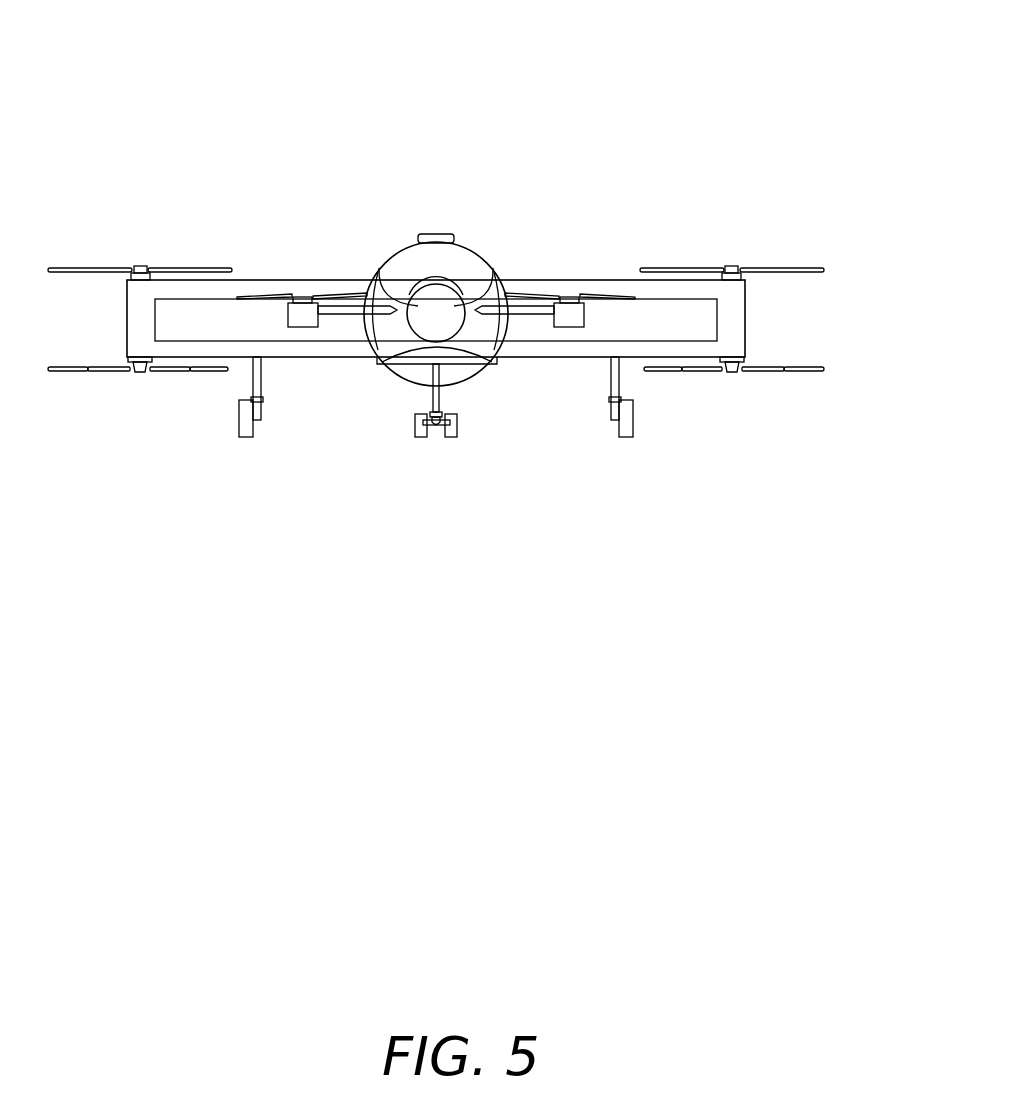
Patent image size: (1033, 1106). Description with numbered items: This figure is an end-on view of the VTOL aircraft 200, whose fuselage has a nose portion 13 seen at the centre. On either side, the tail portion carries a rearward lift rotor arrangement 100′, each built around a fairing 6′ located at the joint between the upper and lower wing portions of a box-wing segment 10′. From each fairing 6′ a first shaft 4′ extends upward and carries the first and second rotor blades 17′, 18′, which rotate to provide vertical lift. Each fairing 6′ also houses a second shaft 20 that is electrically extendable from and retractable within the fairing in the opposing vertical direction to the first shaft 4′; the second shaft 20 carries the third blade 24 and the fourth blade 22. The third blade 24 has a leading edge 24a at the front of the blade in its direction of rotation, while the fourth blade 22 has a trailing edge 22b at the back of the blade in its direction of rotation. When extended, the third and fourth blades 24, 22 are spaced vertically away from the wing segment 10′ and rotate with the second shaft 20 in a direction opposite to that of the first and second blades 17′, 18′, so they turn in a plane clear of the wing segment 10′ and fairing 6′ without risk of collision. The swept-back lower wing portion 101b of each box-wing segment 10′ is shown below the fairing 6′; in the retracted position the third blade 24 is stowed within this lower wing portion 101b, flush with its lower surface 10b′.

The VTOL aircraft 200 is at (557, 62).
The rearward lift rotor arrangement 100′ is at (247, 222).
The fairing 6′ is at (127, 318).
The first rotor blade 17′ is at (182, 267).
The second rotor blade 18′ is at (70, 268).
The first shaft 4′ is at (138, 267).
The nose portion 13 is at (473, 262).
The second shaft 20 is at (130, 372).
The fourth blade 22 is at (50, 372).
The trailing edge 22b is at (80, 372).
The third blade 24 is at (162, 372).
The leading edge 24a is at (202, 372).
The lower wing portion 101b is at (242, 358).
The wing segment 10′ is at (284, 394).
The lower surface 10b′ is at (330, 358).